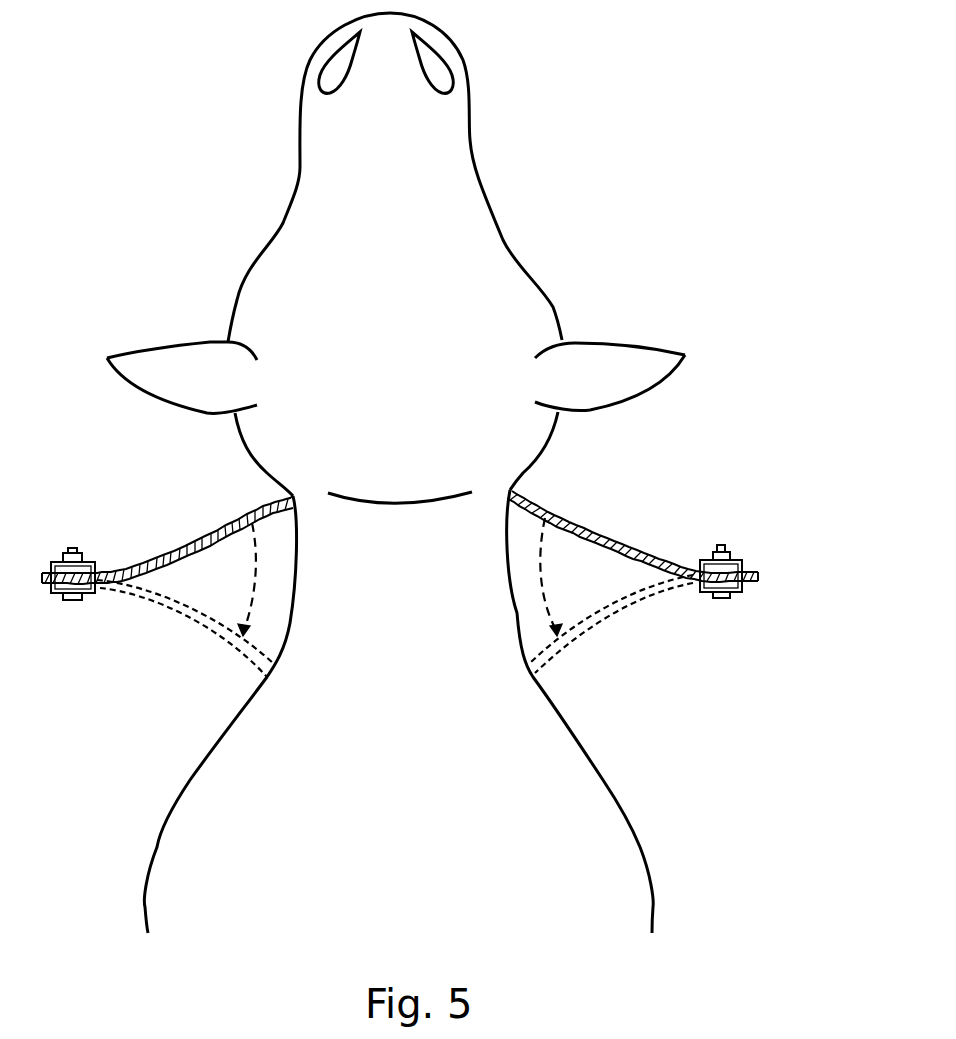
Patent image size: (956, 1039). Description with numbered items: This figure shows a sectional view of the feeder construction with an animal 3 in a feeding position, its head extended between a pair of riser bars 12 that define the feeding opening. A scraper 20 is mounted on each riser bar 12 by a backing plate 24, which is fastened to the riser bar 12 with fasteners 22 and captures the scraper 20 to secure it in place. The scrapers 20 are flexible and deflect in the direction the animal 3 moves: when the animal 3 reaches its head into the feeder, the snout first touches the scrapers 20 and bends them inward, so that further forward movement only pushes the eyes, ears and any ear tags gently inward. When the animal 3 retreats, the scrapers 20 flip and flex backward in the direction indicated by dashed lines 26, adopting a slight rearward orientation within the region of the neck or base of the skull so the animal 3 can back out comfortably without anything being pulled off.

The animal 3 is at (398, 371).
The riser bars 12 is at (55, 597).
The scrapers 20 is at (102, 587).
The fasteners 22 is at (80, 553).
The backing plate 24 is at (57, 560).
The dashed lines 26 is at (250, 590).